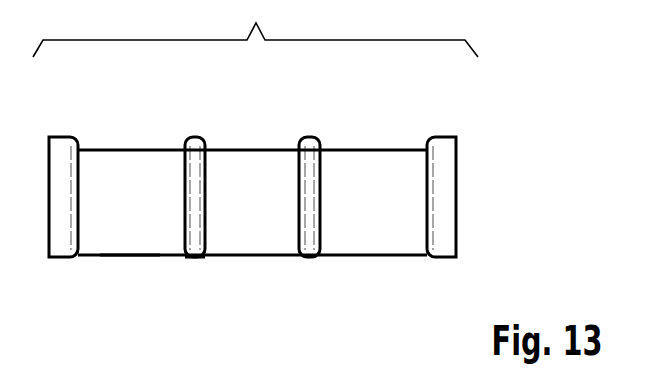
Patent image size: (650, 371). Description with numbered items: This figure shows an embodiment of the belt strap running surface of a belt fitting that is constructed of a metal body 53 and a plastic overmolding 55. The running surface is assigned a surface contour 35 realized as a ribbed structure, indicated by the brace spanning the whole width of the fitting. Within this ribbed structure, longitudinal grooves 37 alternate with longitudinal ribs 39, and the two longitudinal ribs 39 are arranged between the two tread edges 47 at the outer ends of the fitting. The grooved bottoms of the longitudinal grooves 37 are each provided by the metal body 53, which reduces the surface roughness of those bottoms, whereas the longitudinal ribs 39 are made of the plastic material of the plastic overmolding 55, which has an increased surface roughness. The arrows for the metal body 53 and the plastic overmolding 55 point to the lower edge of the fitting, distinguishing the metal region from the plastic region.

The surface contour 35 is at (255, 28).
The longitudinal grooves 37 is at (134, 150).
The longitudinal ribs 39 is at (194, 137).
The tread edges 47 is at (53, 137).
The metal body 53 is at (130, 255).
The plastic overmolding 55 is at (193, 256).